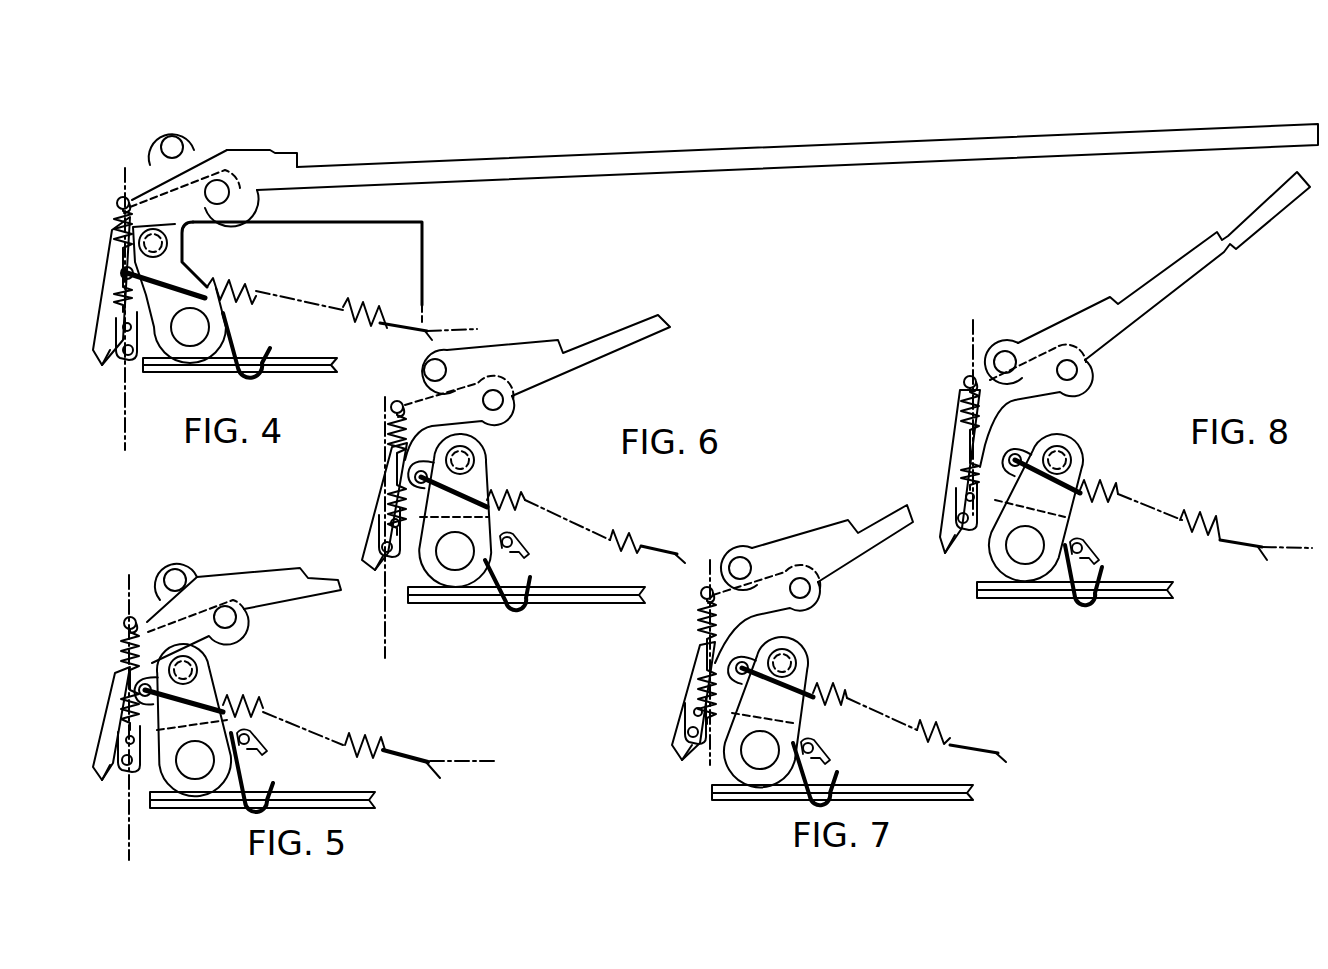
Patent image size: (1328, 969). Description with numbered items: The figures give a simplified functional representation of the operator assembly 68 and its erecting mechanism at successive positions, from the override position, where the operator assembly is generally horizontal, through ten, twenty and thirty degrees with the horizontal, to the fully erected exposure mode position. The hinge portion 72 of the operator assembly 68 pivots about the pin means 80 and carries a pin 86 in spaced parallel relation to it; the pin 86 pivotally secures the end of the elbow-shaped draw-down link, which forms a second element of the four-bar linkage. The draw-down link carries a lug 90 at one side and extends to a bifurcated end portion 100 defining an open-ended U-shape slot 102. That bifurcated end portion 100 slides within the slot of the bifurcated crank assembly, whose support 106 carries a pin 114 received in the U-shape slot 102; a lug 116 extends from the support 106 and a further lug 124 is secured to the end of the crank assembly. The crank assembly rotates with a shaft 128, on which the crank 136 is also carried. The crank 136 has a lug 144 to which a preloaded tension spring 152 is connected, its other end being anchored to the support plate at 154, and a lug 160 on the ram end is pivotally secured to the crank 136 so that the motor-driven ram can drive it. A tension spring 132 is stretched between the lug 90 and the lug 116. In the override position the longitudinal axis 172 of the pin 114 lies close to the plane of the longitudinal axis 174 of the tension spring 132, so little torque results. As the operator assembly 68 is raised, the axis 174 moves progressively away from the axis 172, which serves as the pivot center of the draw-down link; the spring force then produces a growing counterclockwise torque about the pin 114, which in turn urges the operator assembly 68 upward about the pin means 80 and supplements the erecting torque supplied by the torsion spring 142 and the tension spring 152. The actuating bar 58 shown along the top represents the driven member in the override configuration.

In FIG. 4, the actuating bar 58 is at (742, 143).
In FIG. 4, the operator assembly 68 is at (288, 150).
In FIG. 5, the operator assembly 68 is at (258, 562).
In FIG. 6, the operator assembly 68 is at (541, 340).
In FIG. 7, the operator assembly 68 is at (820, 532).
In FIG. 8, the operator assembly 68 is at (1088, 303).
In FIG. 4, the hinge portion 72 is at (137, 156).
In FIG. 5, the hinge portion 72 is at (148, 602).
In FIG. 6, the hinge portion 72 is at (392, 387).
In FIG. 7, the hinge portion 72 is at (710, 581).
In FIG. 8, the hinge portion 72 is at (962, 360).
In FIG. 4, the pin means 80 is at (172, 136).
In FIG. 5, the pin means 80 is at (175, 569).
In FIG. 6, the pin means 80 is at (424, 370).
In FIG. 7, the pin means 80 is at (745, 558).
In FIG. 8, the pin means 80 is at (1005, 350).
In FIG. 4, the pin 86 is at (217, 180).
In FIG. 5, the pin 86 is at (225, 606).
In FIG. 6, the pin 86 is at (505, 400).
In FIG. 7, the pin 86 is at (812, 589).
In FIG. 8, the pin 86 is at (1079, 370).
In FIG. 4, the lug 90 is at (119, 198).
In FIG. 5, the lug 90 is at (123, 623).
In FIG. 6, the lug 90 is at (391, 410).
In FIG. 7, the lug 90 is at (702, 598).
In FIG. 8, the lug 90 is at (963, 383).
In FIG. 4, the bifurcated end portion 100 is at (97, 352).
In FIG. 5, the bifurcated end portion 100 is at (100, 752).
In FIG. 6, the bifurcated end portion 100 is at (366, 556).
In FIG. 7, the bifurcated end portion 100 is at (678, 712).
In FIG. 8, the bifurcated end portion 100 is at (940, 525).
In FIG. 4, the U-shape slot 102 is at (110, 365).
In FIG. 5, the U-shape slot 102 is at (110, 775).
In FIG. 6, the U-shape slot 102 is at (383, 572).
In FIG. 7, the U-shape slot 102 is at (678, 758).
In FIG. 8, the U-shape slot 102 is at (945, 546).
In FIG. 4, the support 106 is at (152, 374).
In FIG. 4, the pin 114 is at (118, 320).
In FIG. 5, the pin 114 is at (120, 715).
In FIG. 4, the lug 116 is at (123, 370).
In FIG. 5, the lug 116 is at (121, 762).
In FIG. 6, the lug 116 is at (381, 546).
In FIG. 7, the lug 116 is at (686, 736).
In FIG. 8, the lug 116 is at (955, 512).
In FIG. 5, the lug 124 is at (258, 752).
In FIG. 6, the lug 124 is at (530, 553).
In FIG. 7, the lug 124 is at (830, 750).
In FIG. 8, the lug 124 is at (1100, 552).
In FIG. 4, the shaft 128 is at (238, 356).
In FIG. 6, the shaft 128 is at (495, 600).
In FIG. 7, the shaft 128 is at (758, 778).
In FIG. 8, the shaft 128 is at (1040, 585).
In FIG. 4, the tension spring 132 is at (113, 244).
In FIG. 5, the tension spring 132 is at (118, 660).
In FIG. 6, the tension spring 132 is at (384, 433).
In FIG. 7, the tension spring 132 is at (690, 680).
In FIG. 8, the tension spring 132 is at (958, 422).
In FIG. 4, the crank 136 is at (182, 288).
In FIG. 5, the crank 136 is at (198, 700).
In FIG. 6, the crank 136 is at (428, 502).
In FIG. 8, the crank 136 is at (1052, 517).
In FIG. 4, the torsion spring 142 is at (190, 343).
In FIG. 5, the torsion spring 142 is at (183, 795).
In FIG. 6, the torsion spring 142 is at (458, 570).
In FIG. 7, the torsion spring 142 is at (727, 768).
In FIG. 8, the torsion spring 142 is at (988, 562).
In FIG. 4, the lug 144 is at (120, 273).
In FIG. 5, the lug 144 is at (138, 688).
In FIG. 6, the lug 144 is at (427, 479).
In FIG. 7, the lug 144 is at (735, 664).
In FIG. 8, the lug 144 is at (1018, 453).
In FIG. 4, the preloaded tension spring 152 is at (348, 306).
In FIG. 5, the preloaded tension spring 152 is at (373, 733).
In FIG. 6, the preloaded tension spring 152 is at (512, 495).
In FIG. 7, the preloaded tension spring 152 is at (843, 697).
In FIG. 8, the preloaded tension spring 152 is at (1192, 522).
In FIG. 4, the connection point on support plate 154 is at (427, 333).
In FIG. 5, the connection point on support plate 154 is at (437, 760).
In FIG. 6, the connection point on support plate 154 is at (677, 548).
In FIG. 7, the connection point on support plate 154 is at (1000, 752).
In FIG. 8, the connection point on support plate 154 is at (1270, 547).
In FIG. 4, the lug 160 is at (140, 237).
In FIG. 5, the lug 160 is at (197, 668).
In FIG. 6, the lug 160 is at (473, 457).
In FIG. 7, the lug 160 is at (798, 662).
In FIG. 8, the lug 160 is at (1072, 459).
In FIG. 4, the longitudinal axis of pin 172 is at (122, 327).
In FIG. 5, the longitudinal axis of pin 172 is at (125, 738).
In FIG. 6, the longitudinal axis of pin 172 is at (389, 522).
In FIG. 4, the longitudinal axis of tension spring 174 is at (122, 430).
In FIG. 5, the longitudinal axis of tension spring 174 is at (126, 828).
In FIG. 6, the longitudinal axis of tension spring 174 is at (383, 633).
In FIG. 7, the longitudinal axis of tension spring 174 is at (678, 645).
In FIG. 8, the longitudinal axis of tension spring 174 is at (965, 336).